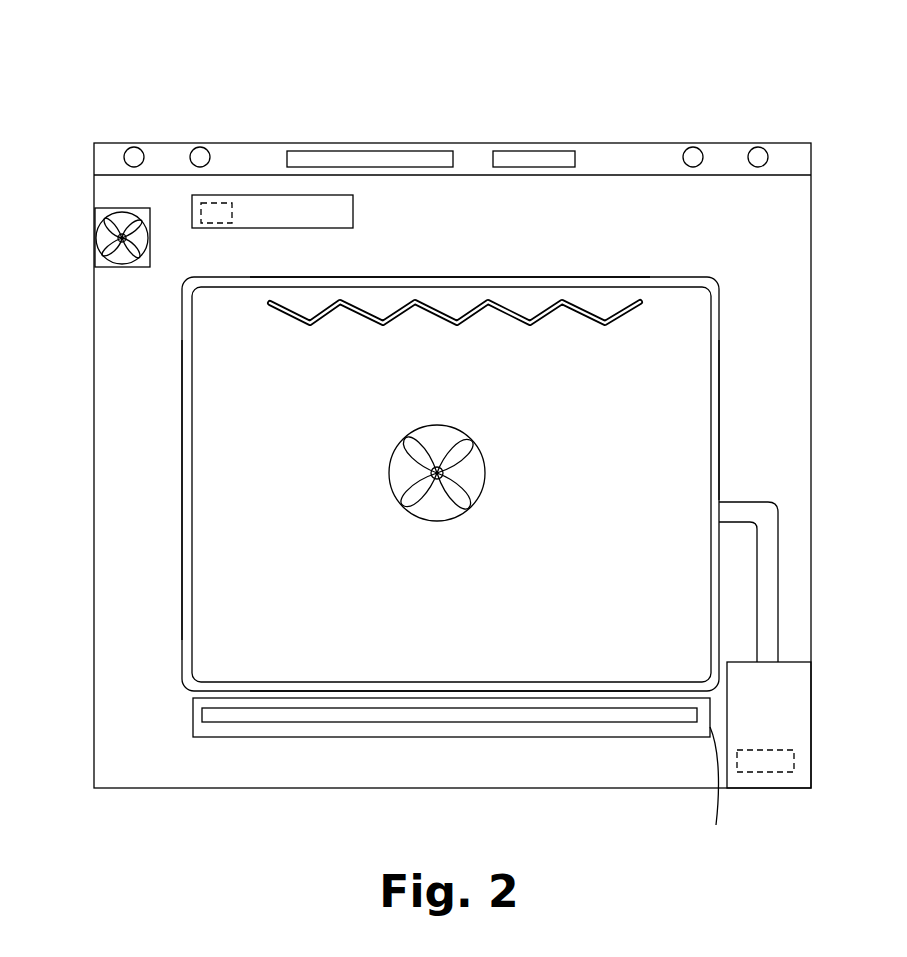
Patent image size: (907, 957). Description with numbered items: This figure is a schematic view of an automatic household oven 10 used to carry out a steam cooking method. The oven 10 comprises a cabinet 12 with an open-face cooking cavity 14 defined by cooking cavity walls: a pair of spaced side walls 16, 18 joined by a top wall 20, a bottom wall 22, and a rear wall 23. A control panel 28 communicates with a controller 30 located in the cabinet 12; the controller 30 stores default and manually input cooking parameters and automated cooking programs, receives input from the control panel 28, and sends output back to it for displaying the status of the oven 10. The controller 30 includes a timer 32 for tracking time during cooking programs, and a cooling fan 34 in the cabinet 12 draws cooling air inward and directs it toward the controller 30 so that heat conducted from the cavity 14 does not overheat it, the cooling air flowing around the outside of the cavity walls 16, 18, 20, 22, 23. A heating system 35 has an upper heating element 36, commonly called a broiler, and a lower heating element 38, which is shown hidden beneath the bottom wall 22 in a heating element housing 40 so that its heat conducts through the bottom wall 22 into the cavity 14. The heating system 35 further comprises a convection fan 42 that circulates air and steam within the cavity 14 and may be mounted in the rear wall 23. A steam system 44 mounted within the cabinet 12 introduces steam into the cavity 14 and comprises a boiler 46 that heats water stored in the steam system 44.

The automatic household oven 10 is at (107, 110).
The cabinet 12 is at (93, 442).
The cooking cavity 14 is at (496, 595).
The side wall 16 is at (705, 447).
The side wall 18 is at (193, 509).
The top wall 20 is at (606, 282).
The bottom wall 22 is at (301, 684).
The rear wall 23 is at (658, 548).
The control panel 28 is at (464, 143).
The controller 30 is at (258, 195).
The timer 32 is at (214, 203).
The cooling fan 34 is at (117, 267).
The heating system 35 is at (367, 323).
The upper heating element 36 is at (620, 323).
The lower heating element 38 is at (363, 715).
The heating element housing 40 is at (712, 792).
The convection fan 42 is at (483, 460).
The steam system 44 is at (793, 661).
The boiler 46 is at (793, 750).